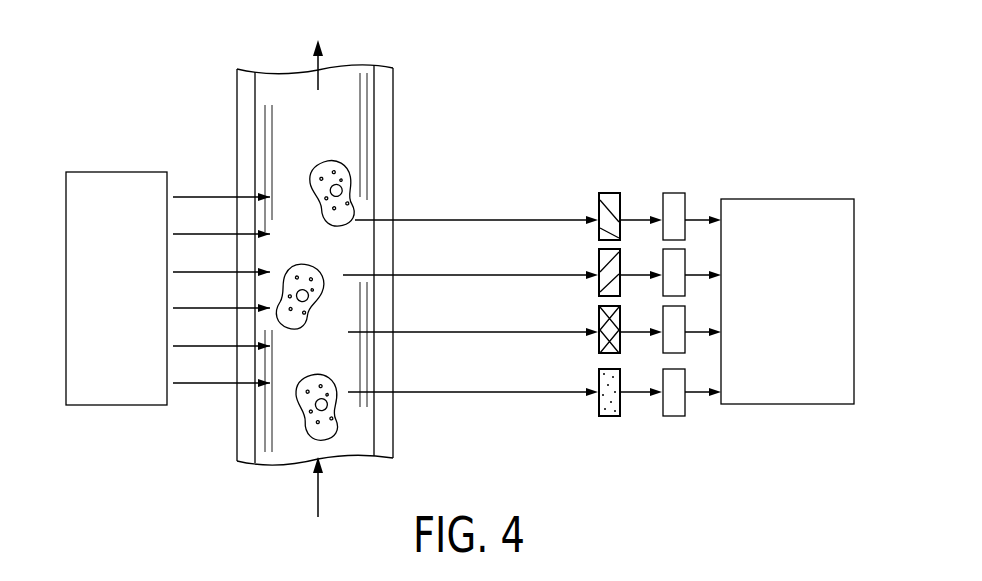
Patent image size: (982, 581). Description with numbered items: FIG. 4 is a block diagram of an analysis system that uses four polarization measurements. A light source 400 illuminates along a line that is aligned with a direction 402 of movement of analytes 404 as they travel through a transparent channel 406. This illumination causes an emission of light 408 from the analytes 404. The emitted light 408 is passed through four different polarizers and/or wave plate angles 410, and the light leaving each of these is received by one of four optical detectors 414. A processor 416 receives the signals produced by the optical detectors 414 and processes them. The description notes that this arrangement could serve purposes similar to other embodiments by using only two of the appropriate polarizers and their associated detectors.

The light source 400 is at (118, 172).
The direction of movement 402 is at (318, 505).
The analytes 404 is at (333, 437).
The transparent channel 406 is at (246, 68).
The emission of light 408 is at (590, 172).
The polarizers and/or wave plate angles 410 is at (585, 160).
The optical detectors 414 is at (647, 160).
The processor 416 is at (787, 198).